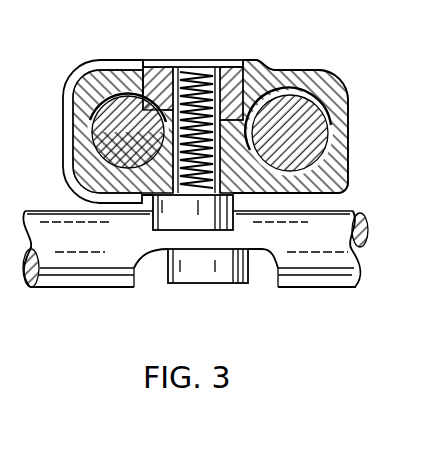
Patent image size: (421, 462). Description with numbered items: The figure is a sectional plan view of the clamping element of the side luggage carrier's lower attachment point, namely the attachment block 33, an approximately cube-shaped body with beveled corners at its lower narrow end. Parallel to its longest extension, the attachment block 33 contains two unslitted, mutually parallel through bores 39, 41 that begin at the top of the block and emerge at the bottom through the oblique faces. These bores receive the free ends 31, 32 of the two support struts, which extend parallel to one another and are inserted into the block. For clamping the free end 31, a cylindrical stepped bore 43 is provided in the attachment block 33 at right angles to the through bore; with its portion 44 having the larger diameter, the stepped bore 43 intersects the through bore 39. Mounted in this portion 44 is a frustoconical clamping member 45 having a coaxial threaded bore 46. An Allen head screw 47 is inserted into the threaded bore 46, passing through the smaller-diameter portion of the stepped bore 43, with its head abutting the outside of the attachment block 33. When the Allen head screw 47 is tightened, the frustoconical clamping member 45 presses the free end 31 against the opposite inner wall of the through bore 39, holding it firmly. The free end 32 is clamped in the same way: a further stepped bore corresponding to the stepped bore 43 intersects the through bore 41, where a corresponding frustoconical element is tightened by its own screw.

The free end 31 is at (108, 137).
The free end 32 is at (310, 128).
The attachment block 33 is at (333, 176).
The through bore 39 is at (100, 82).
The through bore 41 is at (292, 92).
The stepped bore 43 is at (272, 72).
The portion having the larger diameter 44 is at (143, 63).
The frustoconical clamping member 45 is at (231, 75).
The threaded bore 46 is at (207, 66).
The Allen head screw 47 is at (175, 213).